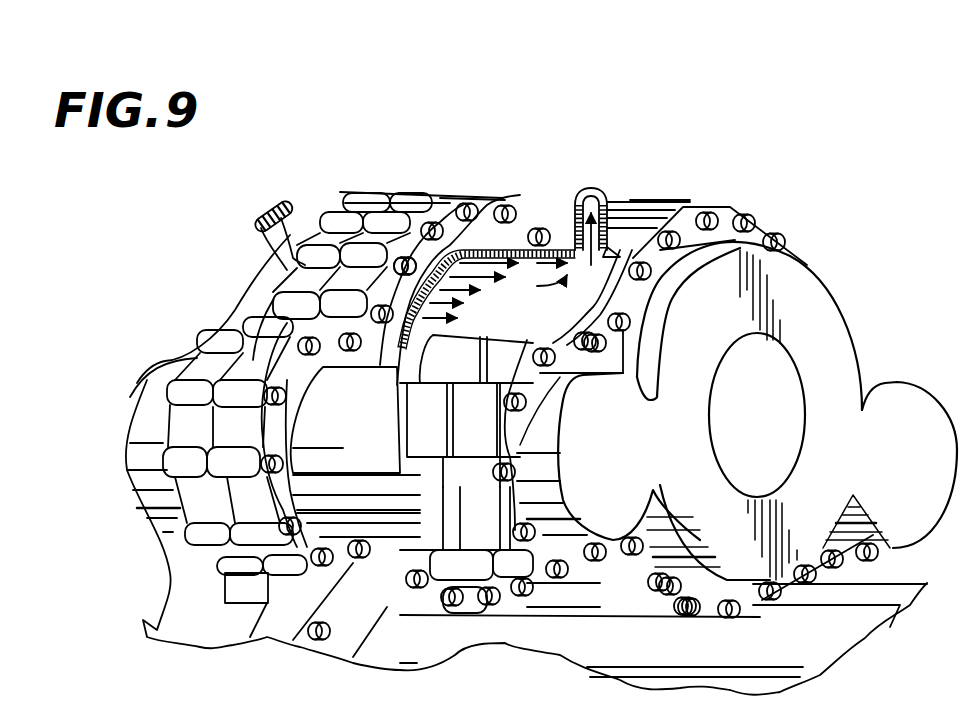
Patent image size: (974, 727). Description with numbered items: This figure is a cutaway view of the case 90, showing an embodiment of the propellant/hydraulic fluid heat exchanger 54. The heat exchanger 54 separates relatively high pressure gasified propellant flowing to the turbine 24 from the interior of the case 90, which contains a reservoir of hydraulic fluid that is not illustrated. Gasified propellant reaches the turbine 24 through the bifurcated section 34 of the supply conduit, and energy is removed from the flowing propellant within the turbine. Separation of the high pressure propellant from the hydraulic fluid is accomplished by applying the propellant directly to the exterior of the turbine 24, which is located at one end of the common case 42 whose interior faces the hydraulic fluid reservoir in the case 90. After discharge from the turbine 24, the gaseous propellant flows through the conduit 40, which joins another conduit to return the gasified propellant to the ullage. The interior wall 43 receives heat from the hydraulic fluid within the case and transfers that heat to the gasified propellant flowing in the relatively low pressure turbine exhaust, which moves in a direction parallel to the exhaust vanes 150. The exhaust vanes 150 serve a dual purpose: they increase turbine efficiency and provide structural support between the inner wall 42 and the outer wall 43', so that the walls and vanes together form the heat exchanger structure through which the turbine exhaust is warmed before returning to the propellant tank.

The turbine 24 is at (447, 193).
The bifurcated section 34 is at (303, 222).
The conduit 40 is at (590, 190).
The common case 42 is at (368, 390).
The interior wall 43 is at (474, 457).
The outer wall 43' is at (486, 267).
The heat exchanger 54 is at (508, 186).
The case 90 is at (862, 328).
The exhaust vanes 150 is at (447, 307).